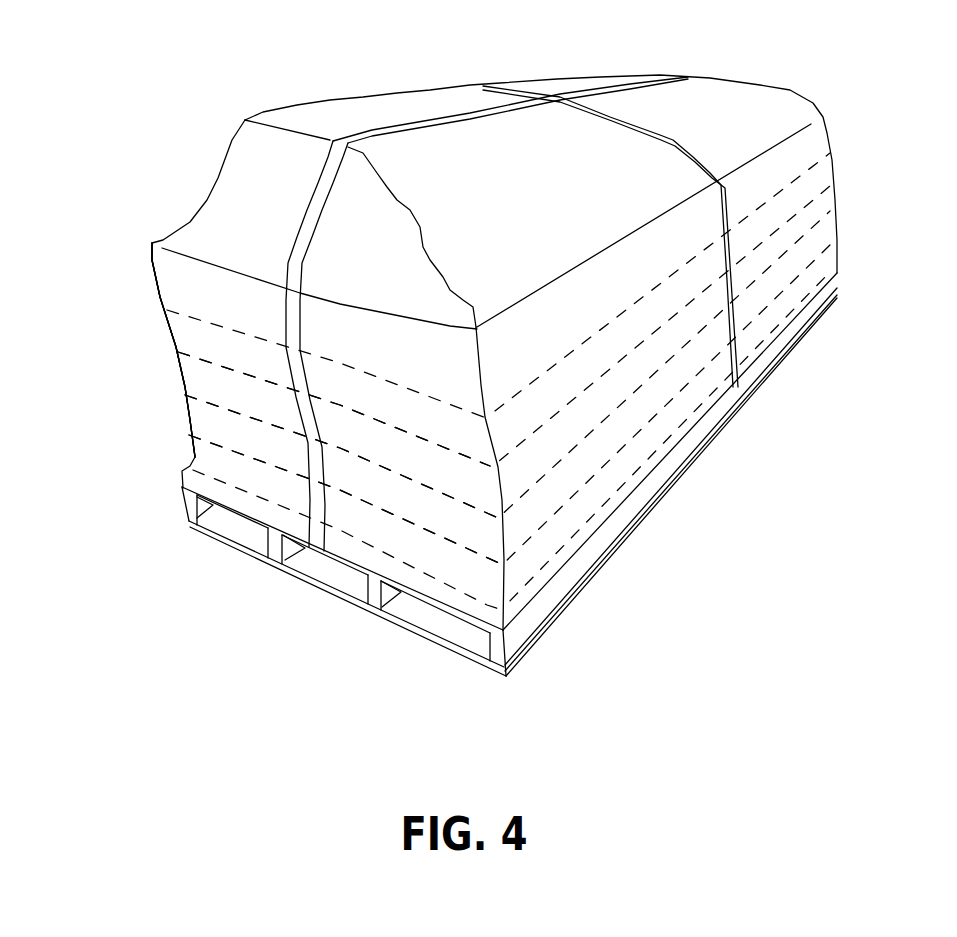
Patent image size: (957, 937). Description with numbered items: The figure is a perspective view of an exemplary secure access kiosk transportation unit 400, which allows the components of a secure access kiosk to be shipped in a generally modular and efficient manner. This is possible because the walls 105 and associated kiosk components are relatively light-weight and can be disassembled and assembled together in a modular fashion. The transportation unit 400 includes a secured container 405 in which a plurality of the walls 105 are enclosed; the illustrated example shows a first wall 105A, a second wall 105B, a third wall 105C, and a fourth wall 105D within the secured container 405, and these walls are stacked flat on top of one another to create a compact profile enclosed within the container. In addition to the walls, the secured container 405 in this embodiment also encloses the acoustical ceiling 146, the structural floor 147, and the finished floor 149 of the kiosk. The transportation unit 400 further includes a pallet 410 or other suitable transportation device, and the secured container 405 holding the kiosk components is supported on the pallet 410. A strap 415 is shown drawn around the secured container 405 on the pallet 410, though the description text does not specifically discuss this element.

The secure access kiosk transportation unit 400 is at (858, 111).
The secured container 405 is at (393, 104).
The pallet 410 is at (508, 692).
The strap 415 is at (563, 80).
The walls 105 is at (170, 398).
The first wall 105A is at (180, 464).
The second wall 105B is at (175, 425).
The third wall 105C is at (168, 371).
The fourth wall 105D is at (170, 332).
The acoustical ceiling 146 is at (130, 256).
The structural floor 147 is at (173, 350).
The finished floor 149 is at (173, 350).